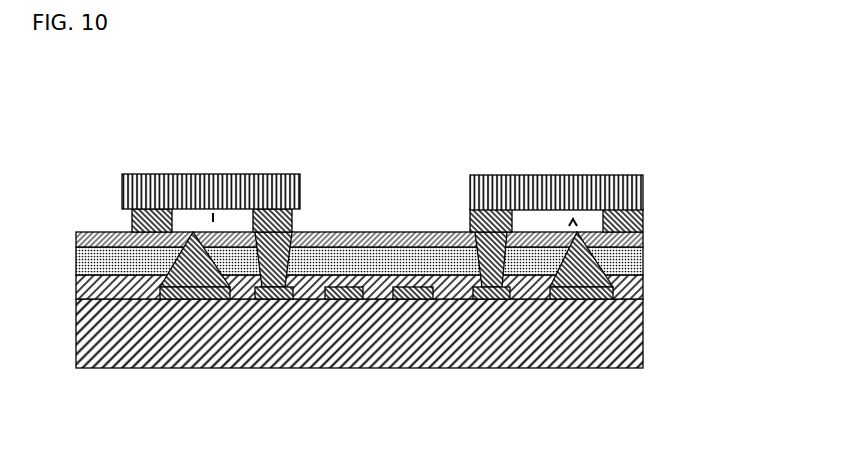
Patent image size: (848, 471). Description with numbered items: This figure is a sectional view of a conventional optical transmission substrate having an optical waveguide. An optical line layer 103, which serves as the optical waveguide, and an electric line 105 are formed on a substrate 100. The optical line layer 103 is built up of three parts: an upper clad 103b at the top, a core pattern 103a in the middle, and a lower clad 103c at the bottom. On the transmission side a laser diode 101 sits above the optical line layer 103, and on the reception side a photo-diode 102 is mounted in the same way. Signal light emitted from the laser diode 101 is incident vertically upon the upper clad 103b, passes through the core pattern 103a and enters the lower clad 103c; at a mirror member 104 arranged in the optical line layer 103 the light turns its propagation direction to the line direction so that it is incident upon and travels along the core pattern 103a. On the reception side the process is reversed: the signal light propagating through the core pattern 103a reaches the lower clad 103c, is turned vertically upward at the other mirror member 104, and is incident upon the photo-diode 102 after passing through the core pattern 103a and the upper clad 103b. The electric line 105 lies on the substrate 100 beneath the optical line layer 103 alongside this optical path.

The substrate 100 is at (553, 350).
The laser diode 101 is at (215, 178).
The photo-diode 102 is at (558, 178).
The optical line layer 103 is at (439, 265).
The core pattern 103a is at (632, 267).
The upper clad 103b is at (643, 240).
The lower clad 103c is at (638, 295).
The mirror member 104 is at (153, 207).
The electric line 105 is at (275, 302).